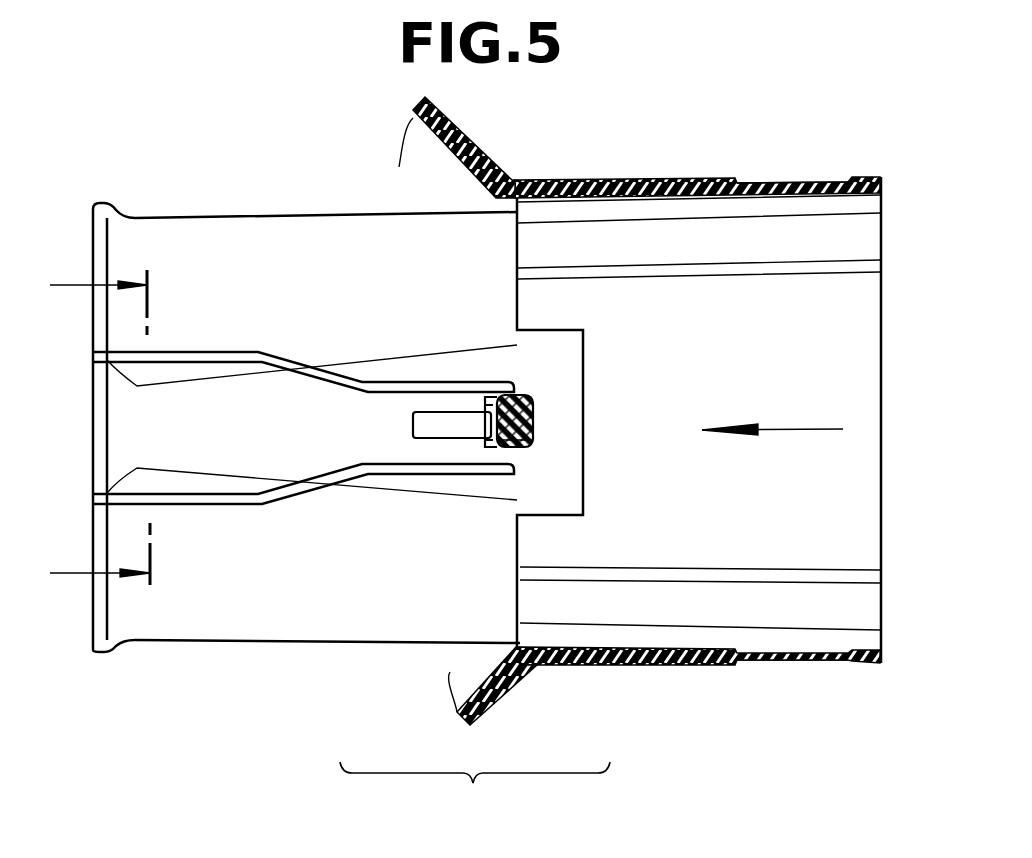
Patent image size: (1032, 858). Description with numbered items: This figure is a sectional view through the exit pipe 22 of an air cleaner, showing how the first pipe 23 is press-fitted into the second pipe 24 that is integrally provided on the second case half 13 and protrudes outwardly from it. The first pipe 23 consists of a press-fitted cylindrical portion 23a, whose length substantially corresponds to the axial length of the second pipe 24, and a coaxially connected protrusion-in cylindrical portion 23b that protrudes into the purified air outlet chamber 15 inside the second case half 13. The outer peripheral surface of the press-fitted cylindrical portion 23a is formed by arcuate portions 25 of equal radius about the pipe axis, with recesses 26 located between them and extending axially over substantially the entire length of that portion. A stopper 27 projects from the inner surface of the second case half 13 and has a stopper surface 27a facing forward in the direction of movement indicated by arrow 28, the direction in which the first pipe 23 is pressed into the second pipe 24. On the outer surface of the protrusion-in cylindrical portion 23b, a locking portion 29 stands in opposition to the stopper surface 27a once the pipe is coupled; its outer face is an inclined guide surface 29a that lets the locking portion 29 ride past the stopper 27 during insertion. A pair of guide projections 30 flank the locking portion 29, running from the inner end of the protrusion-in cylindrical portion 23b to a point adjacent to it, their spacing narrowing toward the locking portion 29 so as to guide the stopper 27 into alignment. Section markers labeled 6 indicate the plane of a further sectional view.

The section line VI-VI 6 is at (100, 436).
The second case half 13 is at (446, 110).
The purified air outlet chamber 15 is at (338, 392).
The exit pipe 22 is at (639, 170).
The first pipe 23 is at (475, 792).
The press-fitted cylindrical portion 23a is at (631, 667).
The protrusion-in cylindrical portion 23b is at (365, 617).
The second pipe 24 is at (705, 668).
The arcuate portions 25 is at (858, 368).
The recesses 26 is at (768, 226).
The stopper 27 is at (518, 402).
The stopper surface 27a is at (491, 440).
The arrow 28 is at (801, 428).
The locking portion 29 is at (488, 410).
The inclined guide surface 29a is at (437, 424).
The guide projections 30 is at (216, 355).